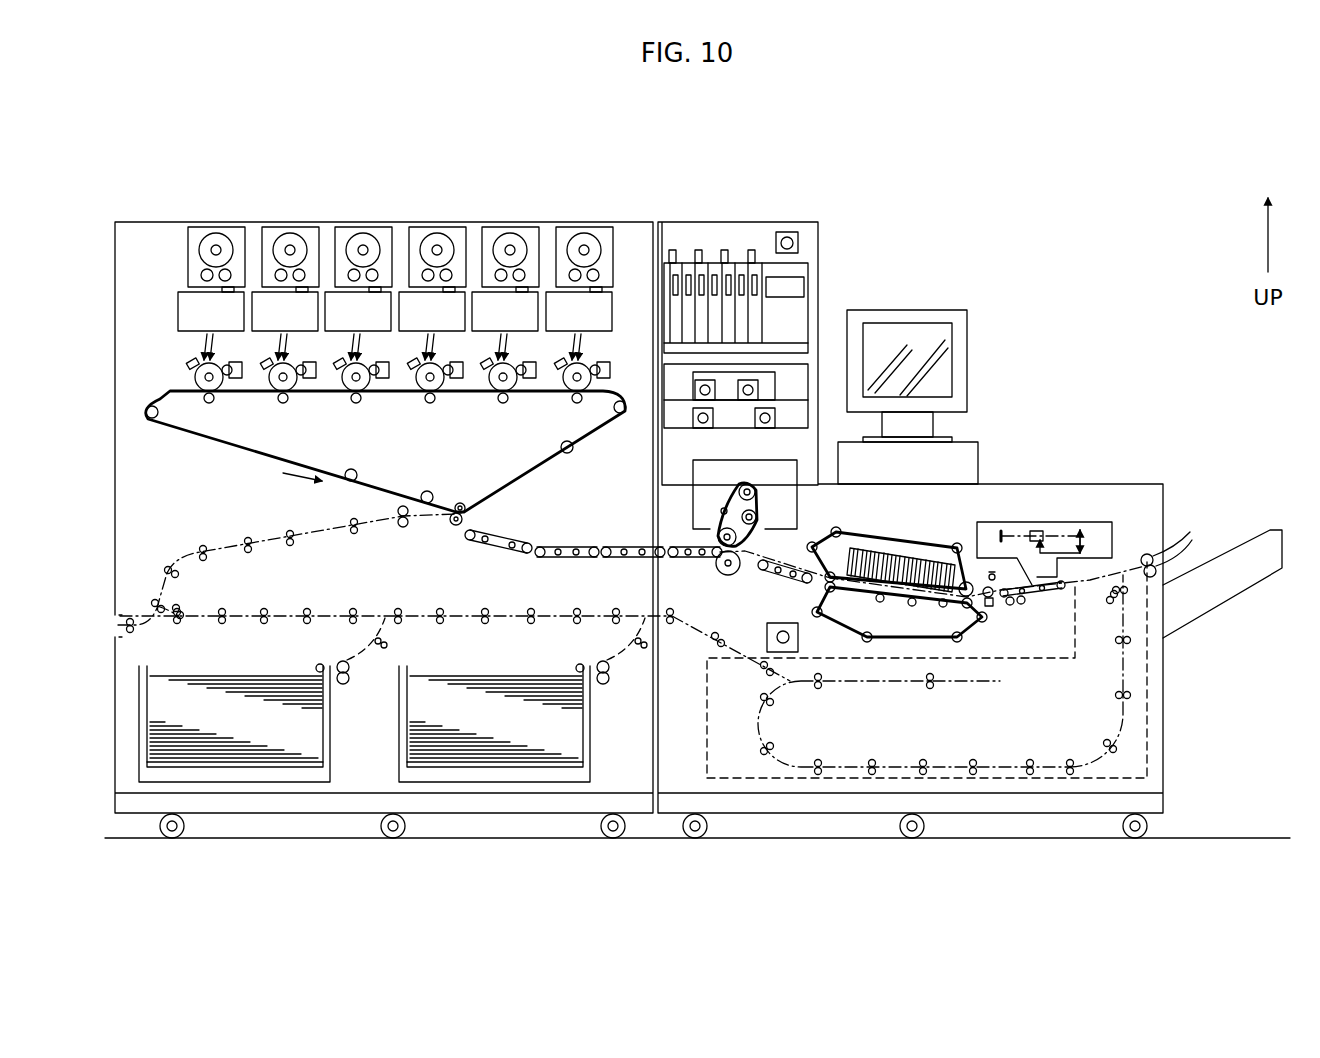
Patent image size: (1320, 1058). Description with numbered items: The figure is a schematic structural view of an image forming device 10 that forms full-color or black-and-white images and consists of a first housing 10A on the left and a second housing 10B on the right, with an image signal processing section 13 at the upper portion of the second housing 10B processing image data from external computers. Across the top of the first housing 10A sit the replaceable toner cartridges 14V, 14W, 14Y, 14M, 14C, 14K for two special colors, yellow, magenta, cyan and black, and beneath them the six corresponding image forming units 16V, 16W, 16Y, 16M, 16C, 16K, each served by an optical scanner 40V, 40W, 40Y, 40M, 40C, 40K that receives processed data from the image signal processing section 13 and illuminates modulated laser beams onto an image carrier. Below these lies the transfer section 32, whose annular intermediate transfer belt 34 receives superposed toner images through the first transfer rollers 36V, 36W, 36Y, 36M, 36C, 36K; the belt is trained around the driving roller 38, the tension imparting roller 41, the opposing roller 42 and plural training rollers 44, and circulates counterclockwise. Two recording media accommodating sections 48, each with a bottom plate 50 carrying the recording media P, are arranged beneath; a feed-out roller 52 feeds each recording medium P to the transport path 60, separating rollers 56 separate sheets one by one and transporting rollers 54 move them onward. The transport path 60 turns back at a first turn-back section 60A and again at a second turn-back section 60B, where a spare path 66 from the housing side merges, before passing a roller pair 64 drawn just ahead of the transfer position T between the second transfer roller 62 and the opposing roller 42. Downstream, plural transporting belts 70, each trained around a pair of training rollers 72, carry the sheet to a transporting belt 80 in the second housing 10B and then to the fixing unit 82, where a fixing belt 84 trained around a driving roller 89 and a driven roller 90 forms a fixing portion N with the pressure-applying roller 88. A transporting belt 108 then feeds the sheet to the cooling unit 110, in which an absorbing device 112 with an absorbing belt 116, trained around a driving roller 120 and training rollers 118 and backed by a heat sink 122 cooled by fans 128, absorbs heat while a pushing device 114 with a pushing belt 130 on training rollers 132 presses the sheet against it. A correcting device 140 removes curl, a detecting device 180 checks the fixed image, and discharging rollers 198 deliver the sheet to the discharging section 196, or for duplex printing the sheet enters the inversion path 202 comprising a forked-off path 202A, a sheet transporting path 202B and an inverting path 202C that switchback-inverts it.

The image forming device 10 is at (1105, 128).
The first housing 10A is at (152, 221).
The second housing 10B is at (795, 221).
The image signal processing section 13 is at (815, 288).
The toner cartridge 14K is at (218, 225).
The toner cartridge 14C is at (292, 225).
The toner cartridge 14M is at (365, 225).
The toner cartridge 14Y is at (439, 225).
The toner cartridge 14W is at (512, 225).
The toner cartridge 14V is at (586, 225).
The image forming unit 16K is at (211, 311).
The image forming unit 16C is at (285, 311).
The image forming unit 16M is at (358, 311).
The image forming unit 16Y is at (432, 311).
The image forming unit 16W is at (505, 311).
The image forming unit 16V is at (592, 366).
The transfer section 32 is at (140, 395).
The intermediate transfer belt 34 is at (246, 441).
The first transfer roller 36K is at (212, 404).
The first transfer roller 36C is at (284, 404).
The first transfer roller 36M is at (357, 404).
The first transfer roller 36Y is at (431, 404).
The first transfer roller 36W is at (503, 404).
The first transfer roller 36V is at (576, 404).
The driving roller 38 is at (624, 401).
The optical scanner 40K is at (205, 333).
The optical scanner 40C is at (258, 333).
The optical scanner 40M is at (331, 333).
The optical scanner 40Y is at (405, 333).
The optical scanner 40W is at (478, 333).
The optical scanner 40V is at (551, 333).
The tension imparting roller 41 is at (153, 419).
The opposing roller 42 is at (462, 503).
The training rollers 44 is at (346, 472).
The recording media accommodating section 48 is at (334, 725).
The bottom plate 50 is at (300, 768).
The feed-out roller 52 is at (317, 665).
The transporting rollers 54 is at (288, 546).
The separating rollers 56 is at (350, 678).
The transport path 60 is at (350, 530).
The first turn-back section 60A is at (398, 622).
The second turn-back section 60B is at (151, 613).
The second transfer roller 62 is at (452, 524).
The registration roller pair 64 is at (399, 526).
The spare path 66 is at (146, 600).
The transporting belts 70 is at (486, 547).
The training rollers 72 is at (542, 547).
The transporting belt 80 is at (666, 560).
The fixing unit 82 is at (690, 478).
The fixing belt 84 is at (735, 490).
The pressure-applying roller 88 is at (714, 568).
The driving roller 89 is at (722, 530).
The driven roller 90 is at (756, 486).
The transporting belt 108 is at (723, 576).
The cooling unit 110 is at (920, 522).
The absorbing device 112 is at (908, 397).
The pushing device 114 is at (788, 610).
The absorbing belt 116 is at (856, 528).
The training rollers 118 is at (833, 532).
The driving roller 120 is at (965, 545).
The heat sink 122 is at (900, 549).
The fans 128 is at (792, 580).
The pushing belt 130 is at (819, 616).
The training rollers 132 is at (941, 607).
The correcting device 140 is at (1014, 600).
The detecting device 180 is at (1080, 508).
The discharging section 196 is at (1243, 598).
The discharging rollers 198 is at (1153, 560).
The inversion path 202 is at (1130, 735).
The forked-off path 202A is at (1120, 673).
The sheet transporting path 202B is at (950, 766).
The inverting path 202C is at (876, 684).
The recording medium P is at (240, 669).
The transfer position T is at (472, 513).
The fixing portion N is at (748, 543).